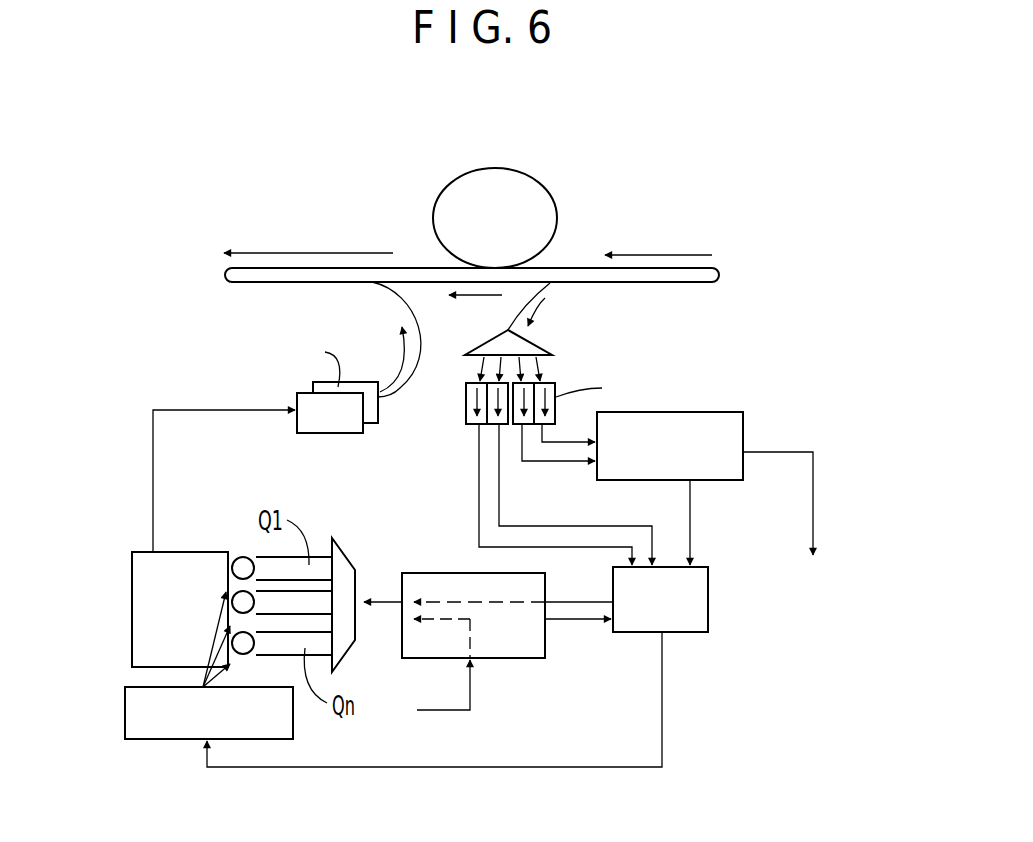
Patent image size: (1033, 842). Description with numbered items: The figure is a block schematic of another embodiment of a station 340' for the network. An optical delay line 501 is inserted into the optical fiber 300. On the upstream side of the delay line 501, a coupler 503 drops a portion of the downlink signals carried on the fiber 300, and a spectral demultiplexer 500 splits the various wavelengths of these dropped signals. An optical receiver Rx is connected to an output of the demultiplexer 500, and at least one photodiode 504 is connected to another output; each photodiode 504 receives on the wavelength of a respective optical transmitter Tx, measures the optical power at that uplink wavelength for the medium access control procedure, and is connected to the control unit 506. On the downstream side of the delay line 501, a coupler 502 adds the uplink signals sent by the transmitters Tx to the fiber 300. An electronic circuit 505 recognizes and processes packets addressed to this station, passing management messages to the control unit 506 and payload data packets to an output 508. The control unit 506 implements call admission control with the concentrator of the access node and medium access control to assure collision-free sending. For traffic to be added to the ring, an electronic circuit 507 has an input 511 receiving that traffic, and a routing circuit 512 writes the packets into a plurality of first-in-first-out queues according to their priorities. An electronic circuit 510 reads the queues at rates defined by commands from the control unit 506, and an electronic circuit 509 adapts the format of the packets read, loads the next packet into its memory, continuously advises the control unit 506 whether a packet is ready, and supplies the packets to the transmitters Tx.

The optical fiber 300 is at (415, 277).
The optical delay line 501 is at (541, 184).
The station 340' is at (824, 185).
The coupler 502 is at (405, 307).
The coupler 503 is at (540, 290).
The spectral demultiplexer 500 is at (535, 340).
The photodiode 504 is at (466, 404).
The electronic circuit 505 is at (710, 432).
The control unit 506 is at (695, 607).
The electronic circuit 507 is at (515, 642).
The output 508 is at (815, 505).
The electronic circuit 509 is at (158, 590).
The electronic circuit 510 is at (145, 713).
The input 511 is at (440, 710).
The routing circuit 512 is at (342, 570).